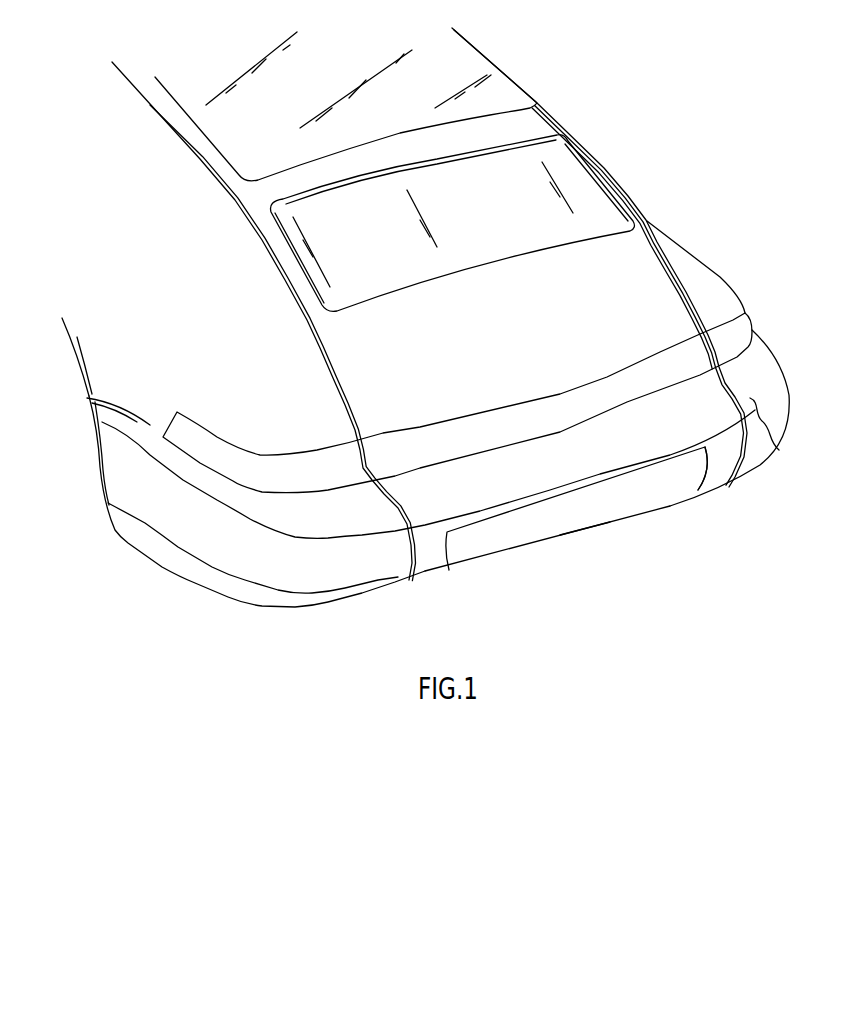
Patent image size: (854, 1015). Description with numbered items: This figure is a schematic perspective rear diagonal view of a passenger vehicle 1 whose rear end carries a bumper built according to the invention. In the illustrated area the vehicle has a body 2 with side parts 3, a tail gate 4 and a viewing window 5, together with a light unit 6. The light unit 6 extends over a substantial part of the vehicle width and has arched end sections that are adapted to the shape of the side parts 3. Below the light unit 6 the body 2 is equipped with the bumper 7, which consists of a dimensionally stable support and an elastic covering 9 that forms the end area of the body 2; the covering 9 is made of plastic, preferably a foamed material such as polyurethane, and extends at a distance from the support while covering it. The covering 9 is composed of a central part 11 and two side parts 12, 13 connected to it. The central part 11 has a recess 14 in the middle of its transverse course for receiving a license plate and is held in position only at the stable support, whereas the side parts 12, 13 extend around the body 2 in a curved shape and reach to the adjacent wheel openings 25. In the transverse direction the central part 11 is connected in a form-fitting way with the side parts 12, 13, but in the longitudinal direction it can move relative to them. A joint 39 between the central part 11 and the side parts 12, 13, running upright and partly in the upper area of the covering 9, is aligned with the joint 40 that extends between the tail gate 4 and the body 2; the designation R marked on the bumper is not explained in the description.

The passenger vehicle 1 is at (610, 166).
The body 2 is at (516, 71).
The side parts 3 is at (718, 293).
The tail gate 4 is at (647, 257).
The viewing window 5 is at (410, 63).
The light unit 6 is at (643, 358).
The bumper 7 is at (360, 598).
The elastic covering 9 is at (711, 498).
The central part 11 is at (462, 572).
The side part 12 is at (242, 568).
The side part 13 is at (772, 444).
The recess 14 is at (635, 503).
The wheel openings 25 is at (76, 378).
The joint 39 is at (730, 393).
The joint 40 is at (331, 372).
The radius R is at (599, 533).